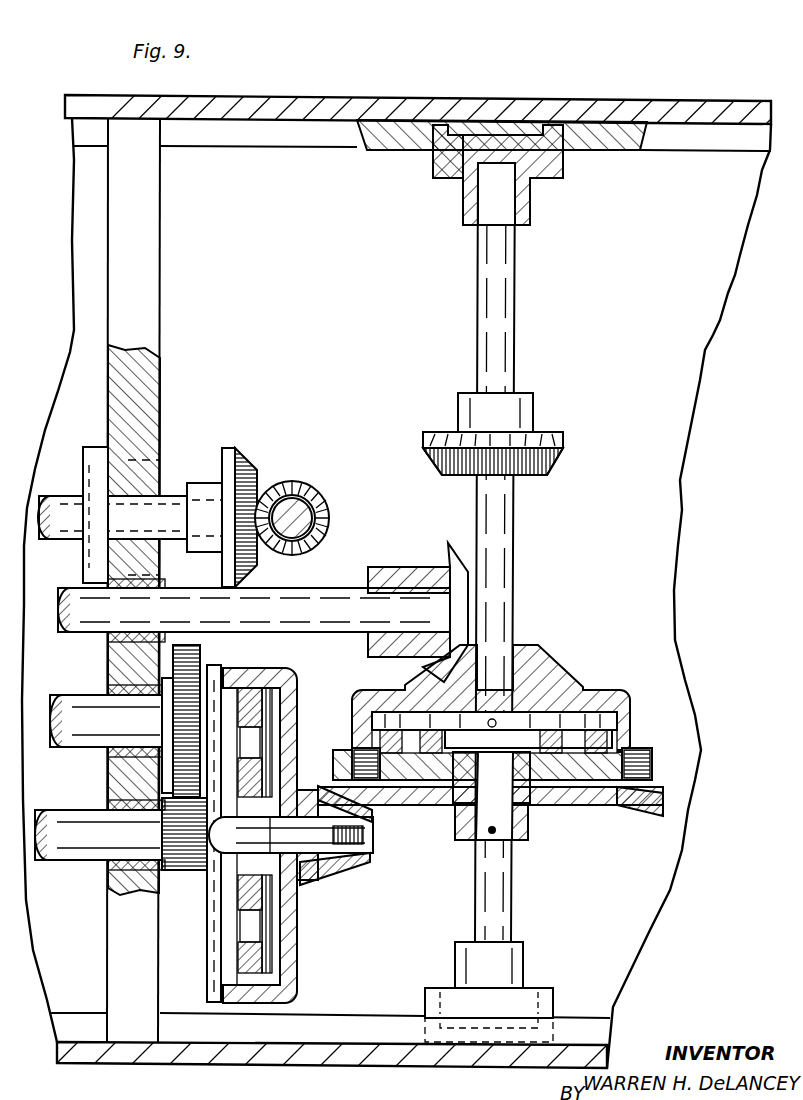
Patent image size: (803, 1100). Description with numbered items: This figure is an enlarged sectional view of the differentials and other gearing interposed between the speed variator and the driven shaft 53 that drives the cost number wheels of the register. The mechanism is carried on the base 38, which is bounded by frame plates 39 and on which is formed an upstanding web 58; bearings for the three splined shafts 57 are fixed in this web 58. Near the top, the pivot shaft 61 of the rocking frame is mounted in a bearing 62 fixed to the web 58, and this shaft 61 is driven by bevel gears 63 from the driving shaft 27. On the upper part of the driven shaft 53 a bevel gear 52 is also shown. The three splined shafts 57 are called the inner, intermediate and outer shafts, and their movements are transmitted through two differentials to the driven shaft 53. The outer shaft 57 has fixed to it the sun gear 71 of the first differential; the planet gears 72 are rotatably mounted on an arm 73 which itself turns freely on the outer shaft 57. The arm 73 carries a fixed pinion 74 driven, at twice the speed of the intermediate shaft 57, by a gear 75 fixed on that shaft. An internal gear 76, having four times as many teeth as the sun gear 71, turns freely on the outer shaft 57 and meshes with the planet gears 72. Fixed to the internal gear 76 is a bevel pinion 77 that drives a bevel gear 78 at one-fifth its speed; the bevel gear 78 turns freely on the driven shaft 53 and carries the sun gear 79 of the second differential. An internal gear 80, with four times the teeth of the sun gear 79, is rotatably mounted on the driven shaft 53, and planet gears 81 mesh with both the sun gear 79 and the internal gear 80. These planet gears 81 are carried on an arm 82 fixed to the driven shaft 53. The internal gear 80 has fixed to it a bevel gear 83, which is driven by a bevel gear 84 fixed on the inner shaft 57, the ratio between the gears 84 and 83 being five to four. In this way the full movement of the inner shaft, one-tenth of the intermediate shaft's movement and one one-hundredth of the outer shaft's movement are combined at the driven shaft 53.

The frame plate 39 is at (305, 106).
The base 38 is at (610, 972).
The upstanding web 58 is at (162, 387).
The shaft 61 is at (70, 535).
The bearing 62 is at (90, 450).
The bevel gear 63 is at (238, 470).
The driving shaft 27 is at (330, 513).
The splined shaft 57 is at (80, 634).
The gear 75 is at (175, 786).
The arm 73 is at (207, 954).
The pinion 74 is at (186, 872).
The planet gear 72 is at (250, 703).
The internal gear 76 is at (264, 977).
The sun gear 71 is at (297, 882).
The bevel pinion 77 is at (343, 866).
The driven shaft 53 is at (495, 540).
The bevel gear 52 is at (550, 462).
The bevel gear 84 is at (445, 556).
The bevel gear 83 is at (553, 672).
The internal gear 80 is at (330, 750).
The arm 82 is at (580, 745).
The planet gear 81 is at (350, 762).
The sun gear 79 is at (533, 828).
The bevel gear 78 is at (640, 820).